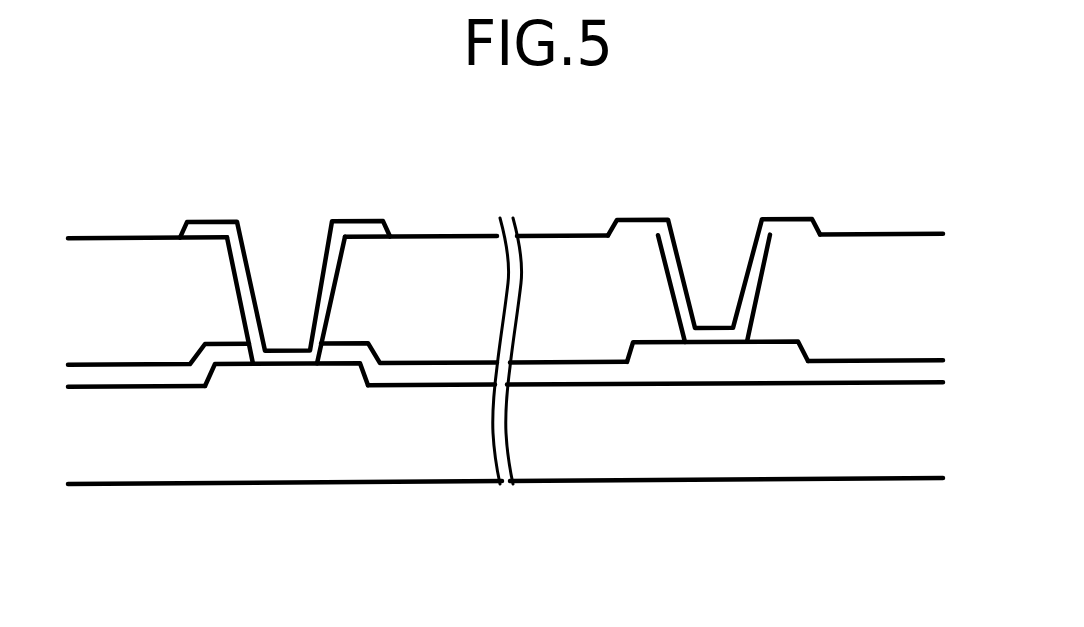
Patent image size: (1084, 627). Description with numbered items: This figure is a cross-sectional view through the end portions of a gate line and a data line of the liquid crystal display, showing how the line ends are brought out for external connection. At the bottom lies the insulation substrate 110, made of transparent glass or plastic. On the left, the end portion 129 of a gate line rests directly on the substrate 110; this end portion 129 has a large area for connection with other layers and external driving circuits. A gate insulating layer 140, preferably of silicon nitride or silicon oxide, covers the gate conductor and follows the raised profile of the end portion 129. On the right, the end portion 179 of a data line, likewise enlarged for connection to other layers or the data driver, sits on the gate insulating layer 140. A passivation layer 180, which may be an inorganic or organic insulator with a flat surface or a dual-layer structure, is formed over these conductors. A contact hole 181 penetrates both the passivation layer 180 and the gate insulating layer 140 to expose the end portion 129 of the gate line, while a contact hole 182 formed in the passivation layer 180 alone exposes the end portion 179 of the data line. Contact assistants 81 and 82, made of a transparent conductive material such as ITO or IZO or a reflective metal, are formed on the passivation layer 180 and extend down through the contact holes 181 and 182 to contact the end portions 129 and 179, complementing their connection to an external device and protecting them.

The insulation substrate 110 is at (352, 447).
The end portion of gate line 129 is at (259, 378).
The gate insulating layer 140 is at (131, 376).
The end portion of data line 179 is at (730, 352).
The passivation layer 180 is at (113, 235).
The contact hole 181 is at (243, 302).
The contact hole 182 is at (690, 298).
The contact assistant 81 is at (213, 222).
The contact assistant 82 is at (642, 222).